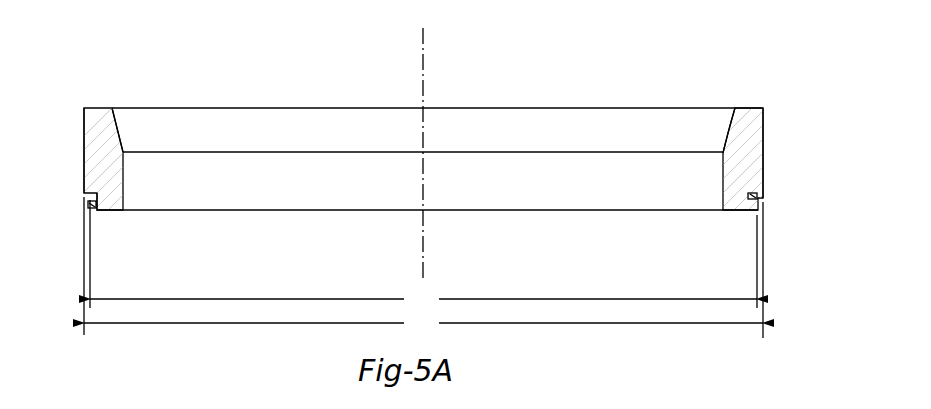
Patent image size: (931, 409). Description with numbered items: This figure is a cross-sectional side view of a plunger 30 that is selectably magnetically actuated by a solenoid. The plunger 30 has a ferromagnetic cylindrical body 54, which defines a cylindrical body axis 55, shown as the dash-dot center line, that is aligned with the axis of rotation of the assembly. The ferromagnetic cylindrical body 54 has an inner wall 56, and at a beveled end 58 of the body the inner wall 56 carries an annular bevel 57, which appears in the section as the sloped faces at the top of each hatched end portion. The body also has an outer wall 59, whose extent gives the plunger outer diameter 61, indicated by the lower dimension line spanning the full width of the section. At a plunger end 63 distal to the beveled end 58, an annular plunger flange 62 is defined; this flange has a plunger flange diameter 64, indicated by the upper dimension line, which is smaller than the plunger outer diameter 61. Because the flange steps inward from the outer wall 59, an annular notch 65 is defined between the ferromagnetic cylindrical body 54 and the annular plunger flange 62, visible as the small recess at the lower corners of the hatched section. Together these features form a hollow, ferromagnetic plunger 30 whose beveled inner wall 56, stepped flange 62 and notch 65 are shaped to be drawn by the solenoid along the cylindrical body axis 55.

The plunger 30 is at (594, 32).
The ferromagnetic cylindrical body 54 is at (723, 200).
The cylindrical body axis 55 is at (425, 47).
The inner wall 56 is at (123, 186).
The annular bevel 57 is at (119, 132).
The beveled end 58 is at (750, 108).
The outer wall 59 is at (83, 148).
The plunger outer diameter 61 is at (423, 267).
The annular plunger flange 62 is at (93, 209).
The plunger end 63 is at (112, 212).
The plunger flange diameter 64 is at (423, 254).
The annular notch 65 is at (758, 196).